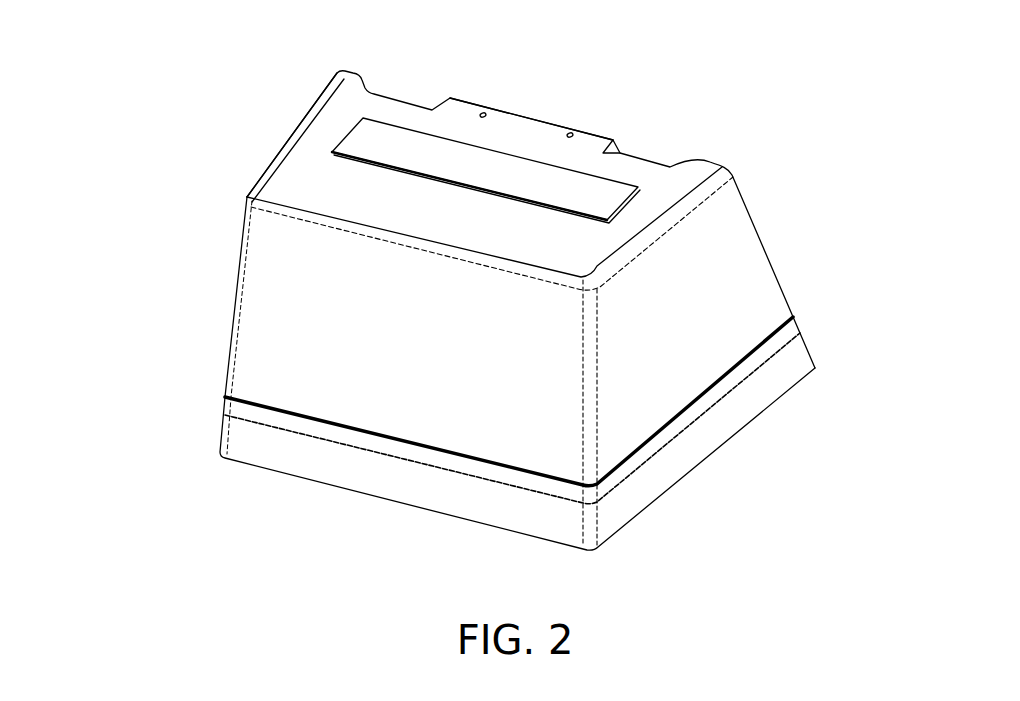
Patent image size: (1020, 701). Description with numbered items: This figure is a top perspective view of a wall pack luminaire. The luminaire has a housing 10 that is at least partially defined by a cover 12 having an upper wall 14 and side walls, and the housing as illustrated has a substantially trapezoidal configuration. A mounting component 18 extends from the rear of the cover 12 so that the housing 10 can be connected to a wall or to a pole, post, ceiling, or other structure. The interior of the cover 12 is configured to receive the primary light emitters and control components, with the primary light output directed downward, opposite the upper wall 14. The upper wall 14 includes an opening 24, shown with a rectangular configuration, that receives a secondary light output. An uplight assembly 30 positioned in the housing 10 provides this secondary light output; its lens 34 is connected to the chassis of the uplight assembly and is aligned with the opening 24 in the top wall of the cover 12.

The housing 10 is at (160, 178).
The cover 12 is at (784, 282).
The upper wall 14 is at (665, 185).
The mounting component 18 is at (522, 117).
The opening 24 is at (332, 150).
The uplight assembly 30 is at (439, 142).
The lens 34 is at (572, 185).